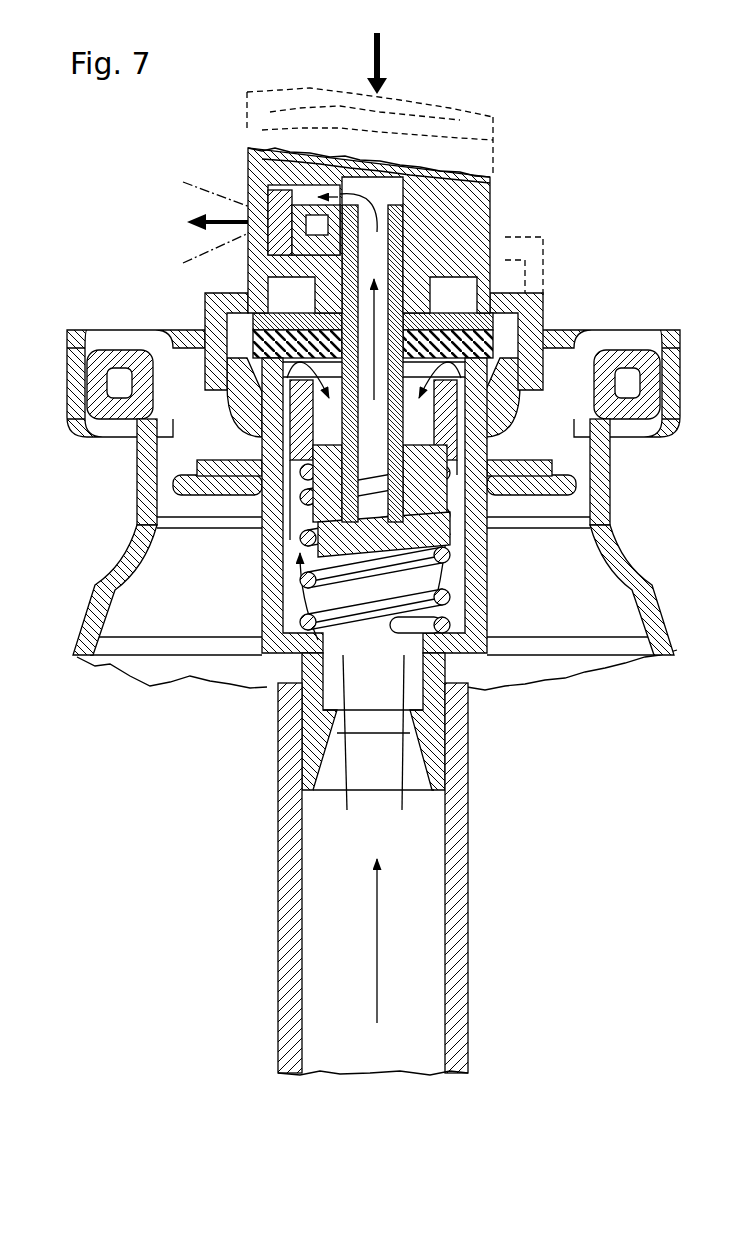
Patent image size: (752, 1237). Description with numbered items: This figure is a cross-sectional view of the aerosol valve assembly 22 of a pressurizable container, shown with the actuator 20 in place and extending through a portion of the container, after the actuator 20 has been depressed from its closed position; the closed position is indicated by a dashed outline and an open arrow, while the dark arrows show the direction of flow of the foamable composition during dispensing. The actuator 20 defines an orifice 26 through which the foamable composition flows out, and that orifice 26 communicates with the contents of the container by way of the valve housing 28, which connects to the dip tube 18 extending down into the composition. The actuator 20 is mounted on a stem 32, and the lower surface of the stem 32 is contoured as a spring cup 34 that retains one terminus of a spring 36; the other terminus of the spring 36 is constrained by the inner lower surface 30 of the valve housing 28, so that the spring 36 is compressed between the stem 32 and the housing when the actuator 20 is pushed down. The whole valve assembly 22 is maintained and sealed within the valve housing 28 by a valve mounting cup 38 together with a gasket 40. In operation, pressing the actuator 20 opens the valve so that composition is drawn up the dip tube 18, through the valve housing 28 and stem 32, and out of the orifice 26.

The dip tube 18 is at (468, 842).
The actuator 20 is at (462, 182).
The aerosol valve assembly 22 is at (226, 609).
The orifice 26 is at (247, 207).
The valve housing 28 is at (487, 620).
The inner lower surface 30 is at (263, 660).
The stem 32 is at (410, 253).
The spring cup 34 is at (137, 524).
The spring 36 is at (488, 590).
The valve mounting cup 38 is at (207, 450).
The gasket 40 is at (543, 306).